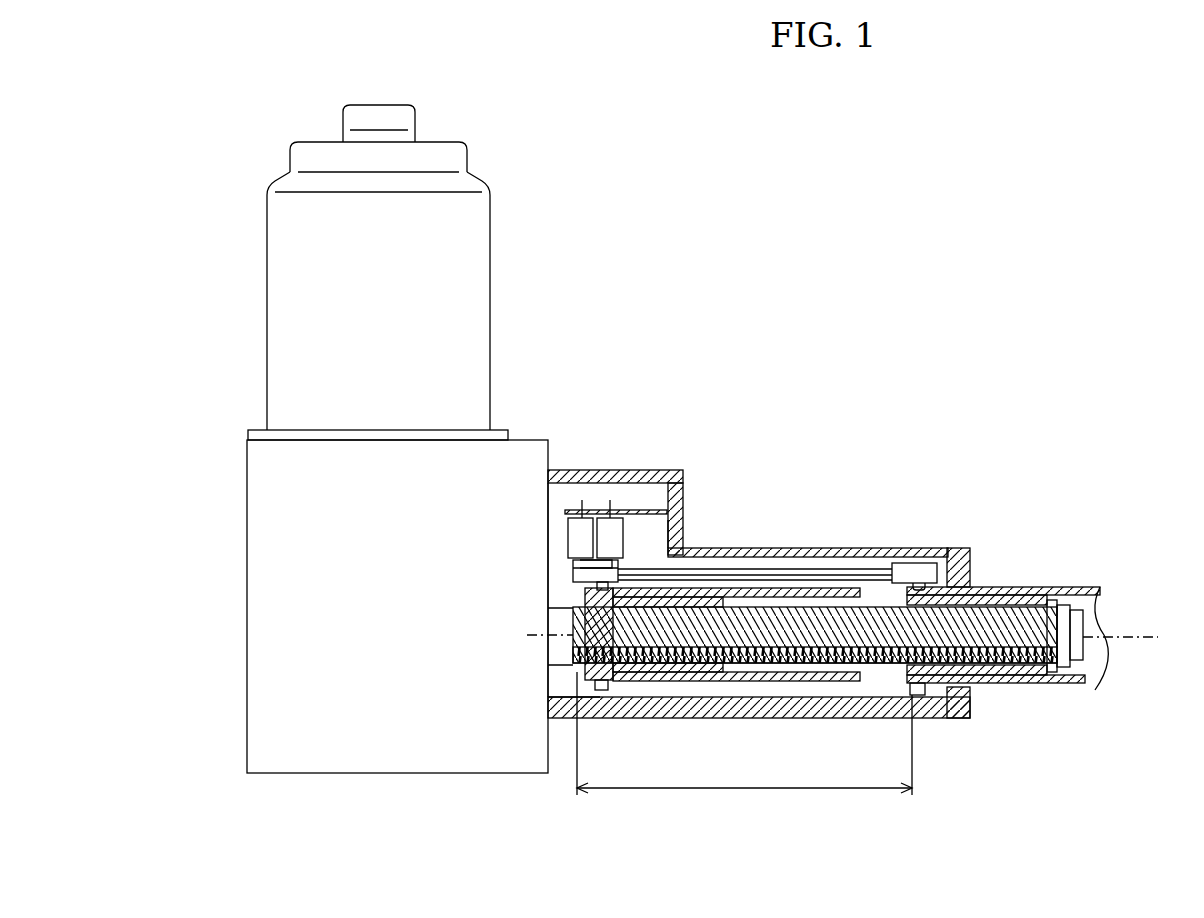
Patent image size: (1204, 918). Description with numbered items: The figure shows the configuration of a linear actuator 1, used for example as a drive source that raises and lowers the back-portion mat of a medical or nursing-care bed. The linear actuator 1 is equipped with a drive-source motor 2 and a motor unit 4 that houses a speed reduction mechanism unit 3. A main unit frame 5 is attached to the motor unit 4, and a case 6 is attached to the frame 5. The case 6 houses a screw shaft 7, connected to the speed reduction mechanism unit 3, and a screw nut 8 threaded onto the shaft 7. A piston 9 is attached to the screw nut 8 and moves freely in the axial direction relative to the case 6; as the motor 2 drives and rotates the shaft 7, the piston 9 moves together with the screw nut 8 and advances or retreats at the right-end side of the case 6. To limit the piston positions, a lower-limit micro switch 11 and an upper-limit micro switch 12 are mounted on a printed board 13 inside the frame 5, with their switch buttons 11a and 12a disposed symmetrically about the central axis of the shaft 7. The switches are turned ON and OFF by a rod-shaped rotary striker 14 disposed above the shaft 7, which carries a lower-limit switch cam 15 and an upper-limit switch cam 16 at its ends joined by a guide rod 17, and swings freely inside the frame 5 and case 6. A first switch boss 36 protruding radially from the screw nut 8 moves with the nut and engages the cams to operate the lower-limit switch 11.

The linear actuator 1 is at (780, 285).
The drive-source motor 2 is at (450, 282).
The speed reduction mechanism unit 3 is at (340, 732).
The motor unit 4 is at (280, 409).
The main unit frame 5 is at (665, 470).
The case 6 is at (960, 720).
The screw shaft 7 is at (1012, 632).
The screw nut 8 is at (563, 700).
The piston 9 is at (810, 578).
The micro switch 11 is at (642, 511).
The switch button 11a is at (628, 548).
The micro switch 12 is at (582, 528).
The switch button 12a is at (580, 565).
The printed board 13 is at (621, 533).
The rotary striker 14 is at (842, 571).
The lower-limit switch cam 15 is at (592, 580).
The upper-limit switch cam 16 is at (918, 565).
The guide rod 17 is at (760, 569).
The first switch boss 36 is at (612, 583).